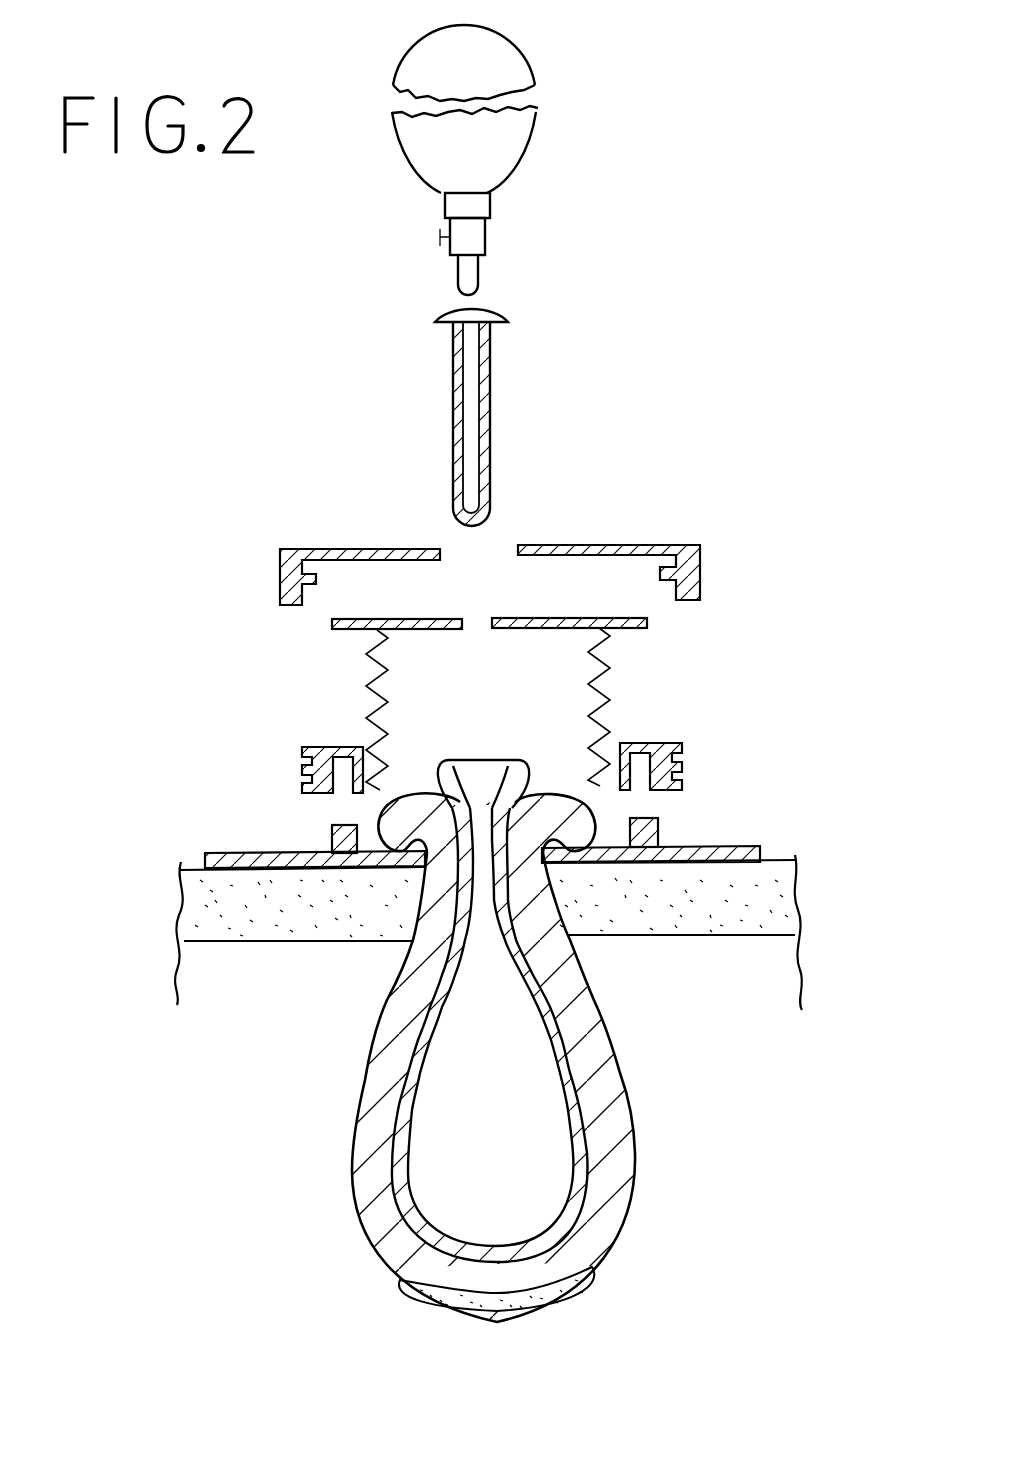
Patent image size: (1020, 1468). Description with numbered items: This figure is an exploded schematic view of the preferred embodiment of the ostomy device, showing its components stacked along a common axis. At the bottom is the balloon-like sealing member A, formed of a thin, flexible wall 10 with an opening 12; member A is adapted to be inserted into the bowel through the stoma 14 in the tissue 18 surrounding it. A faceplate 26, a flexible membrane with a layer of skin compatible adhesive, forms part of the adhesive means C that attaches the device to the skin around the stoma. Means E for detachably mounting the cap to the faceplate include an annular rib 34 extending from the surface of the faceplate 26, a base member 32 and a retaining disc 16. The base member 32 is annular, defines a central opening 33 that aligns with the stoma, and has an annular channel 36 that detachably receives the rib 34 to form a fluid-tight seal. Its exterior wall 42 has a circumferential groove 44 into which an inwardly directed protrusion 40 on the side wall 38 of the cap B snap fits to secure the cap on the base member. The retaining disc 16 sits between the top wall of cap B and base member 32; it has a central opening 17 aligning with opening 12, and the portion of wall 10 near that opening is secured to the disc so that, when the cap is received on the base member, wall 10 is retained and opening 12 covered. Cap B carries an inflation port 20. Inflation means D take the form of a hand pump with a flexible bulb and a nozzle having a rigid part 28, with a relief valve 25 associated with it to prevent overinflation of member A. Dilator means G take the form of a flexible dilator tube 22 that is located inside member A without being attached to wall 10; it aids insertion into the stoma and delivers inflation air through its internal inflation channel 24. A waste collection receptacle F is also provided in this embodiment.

The inflation means D is at (494, 160).
The relief valve 25 is at (440, 238).
The rigid nozzle part 28 is at (481, 246).
The dilator means G is at (480, 417).
The dilator tube 22 is at (480, 424).
The internal inflation channel 24 is at (490, 470).
The inflation port 20 is at (294, 540).
The cap B is at (627, 540).
The side wall 38 is at (294, 571).
The protrusion 40 is at (320, 582).
The retaining disc 16 is at (540, 612).
The central opening 17 is at (477, 625).
The waste collection receptacle F is at (358, 686).
The central opening 33 is at (585, 742).
The opening 12 is at (482, 780).
The circumferential groove 44 is at (278, 773).
The annular channel 36 is at (330, 797).
The detachable mounting means E is at (713, 723).
The base member 32 is at (693, 723).
The exterior wall 42 is at (682, 750).
The adhesive means C is at (531, 824).
The faceplate 26 is at (531, 815).
The annular rib 34 is at (660, 828).
The tissue 18 is at (192, 912).
The stoma 14 is at (400, 832).
The wall 10 is at (413, 971).
The sealing member A is at (436, 1001).